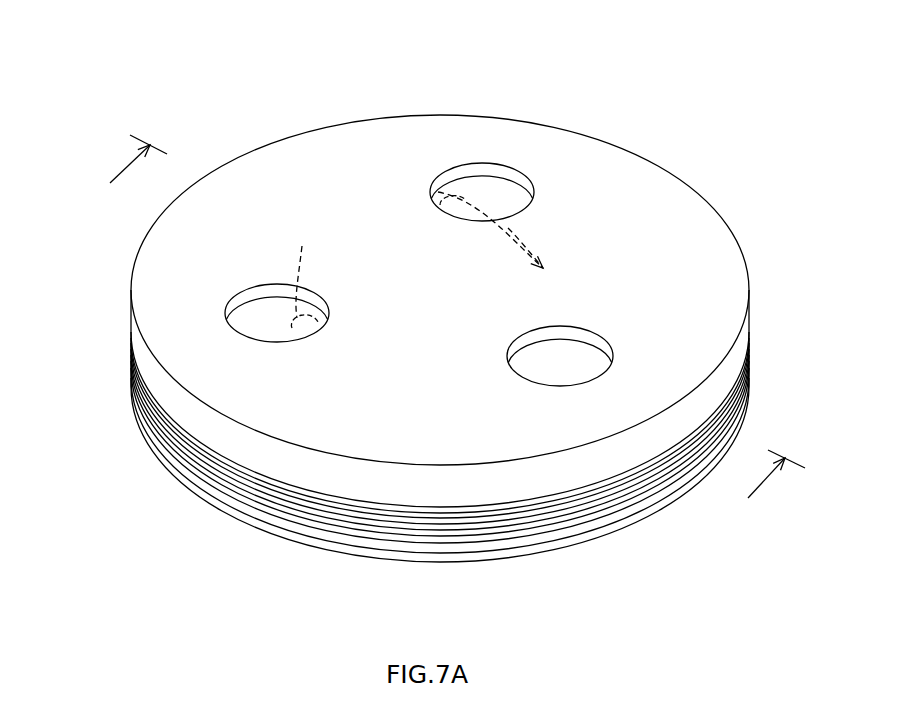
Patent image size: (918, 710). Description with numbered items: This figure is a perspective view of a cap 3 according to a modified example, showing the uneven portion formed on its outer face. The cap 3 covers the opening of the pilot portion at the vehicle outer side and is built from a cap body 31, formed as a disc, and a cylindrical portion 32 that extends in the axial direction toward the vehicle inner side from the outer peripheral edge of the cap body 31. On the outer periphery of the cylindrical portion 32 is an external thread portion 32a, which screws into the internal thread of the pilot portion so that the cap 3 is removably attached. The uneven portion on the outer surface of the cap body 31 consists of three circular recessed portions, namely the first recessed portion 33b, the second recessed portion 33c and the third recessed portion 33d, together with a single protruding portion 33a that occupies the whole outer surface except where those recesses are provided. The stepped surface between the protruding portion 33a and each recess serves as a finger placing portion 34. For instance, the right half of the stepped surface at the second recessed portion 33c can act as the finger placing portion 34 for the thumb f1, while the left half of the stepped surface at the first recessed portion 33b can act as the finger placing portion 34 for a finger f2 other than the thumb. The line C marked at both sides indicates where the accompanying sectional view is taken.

The cap 3 is at (255, 127).
The cap body 31 is at (315, 125).
The cylindrical portion 32 is at (656, 491).
The external thread portion 32a is at (542, 544).
The protruding portion 33a is at (460, 135).
The first recessed portion 33b is at (520, 195).
The second recessed portion 33c is at (252, 321).
The third recessed portion 33d is at (553, 370).
The finger placing portion 34 is at (440, 170).
The thumb f1 is at (299, 273).
The finger other than the thumb f2 is at (506, 244).
The line C- C is at (447, 329).